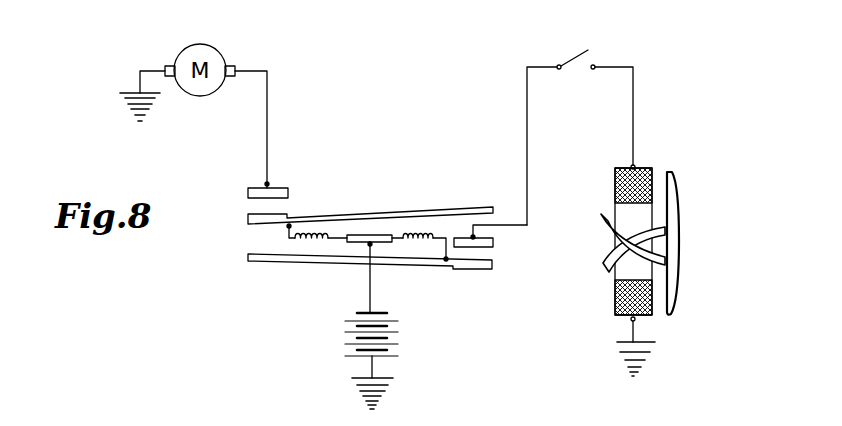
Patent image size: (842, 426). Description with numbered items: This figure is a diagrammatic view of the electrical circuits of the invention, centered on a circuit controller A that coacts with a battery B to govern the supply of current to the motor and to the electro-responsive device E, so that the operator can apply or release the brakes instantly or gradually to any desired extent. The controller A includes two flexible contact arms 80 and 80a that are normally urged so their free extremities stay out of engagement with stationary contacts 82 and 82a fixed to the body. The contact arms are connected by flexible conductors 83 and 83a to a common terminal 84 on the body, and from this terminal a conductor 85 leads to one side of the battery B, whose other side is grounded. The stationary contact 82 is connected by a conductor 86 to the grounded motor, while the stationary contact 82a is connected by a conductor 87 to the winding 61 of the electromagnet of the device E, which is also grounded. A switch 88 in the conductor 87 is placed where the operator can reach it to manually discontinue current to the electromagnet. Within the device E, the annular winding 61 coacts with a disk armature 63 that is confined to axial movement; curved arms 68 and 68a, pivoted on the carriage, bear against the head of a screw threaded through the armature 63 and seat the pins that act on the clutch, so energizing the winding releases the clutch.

The conductor 86 is at (268, 119).
The stationary contact 82 is at (247, 192).
The flexible contact arm 80 is at (332, 217).
The flexible contact arm 80a is at (422, 265).
The flexible conductor 83 is at (290, 238).
The flexible conductor 83a is at (420, 238).
The terminal 84 is at (360, 236).
The conductor 85 is at (371, 289).
The stationary contact 82a is at (495, 242).
The conductor 87 is at (528, 132).
The switch 88 is at (571, 59).
The winding 61 is at (623, 302).
The disk armature 63 is at (668, 218).
The curved arm 68 is at (607, 266).
The curved arm 68a is at (605, 230).
The circuit controller A is at (402, 207).
The battery B is at (395, 338).
The electro-responsive device E is at (655, 164).